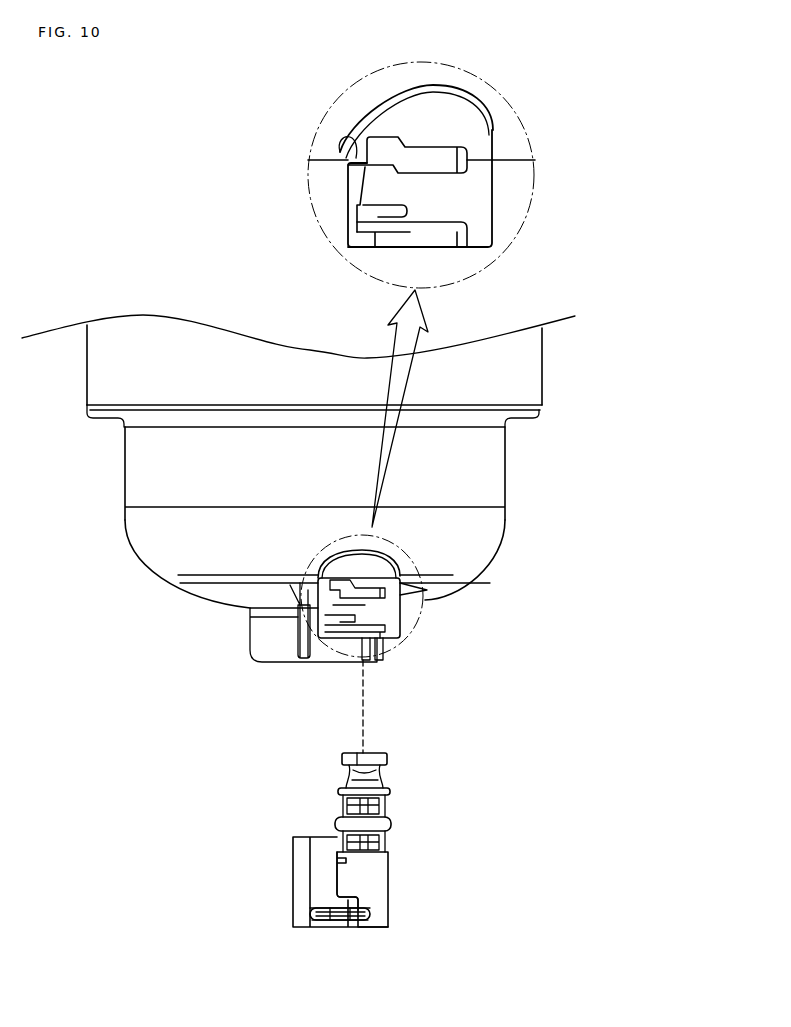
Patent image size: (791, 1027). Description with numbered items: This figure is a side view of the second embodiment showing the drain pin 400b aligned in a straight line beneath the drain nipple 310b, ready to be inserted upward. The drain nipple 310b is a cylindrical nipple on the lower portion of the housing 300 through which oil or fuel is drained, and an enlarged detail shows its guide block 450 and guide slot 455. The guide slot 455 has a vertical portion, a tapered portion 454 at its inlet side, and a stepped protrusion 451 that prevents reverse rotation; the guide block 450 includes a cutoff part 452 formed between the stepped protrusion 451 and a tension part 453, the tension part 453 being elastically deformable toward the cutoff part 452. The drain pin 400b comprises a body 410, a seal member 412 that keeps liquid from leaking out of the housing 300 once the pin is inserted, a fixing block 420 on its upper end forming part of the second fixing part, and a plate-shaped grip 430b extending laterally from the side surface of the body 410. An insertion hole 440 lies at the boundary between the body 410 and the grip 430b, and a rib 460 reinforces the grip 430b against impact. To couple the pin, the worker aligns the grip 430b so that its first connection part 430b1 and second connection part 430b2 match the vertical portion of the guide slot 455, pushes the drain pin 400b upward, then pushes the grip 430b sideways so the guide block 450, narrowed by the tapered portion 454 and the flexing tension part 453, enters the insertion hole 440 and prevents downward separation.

The housing 300 is at (507, 463).
The drain nipple 310b is at (403, 605).
The drain pin 400b is at (322, 778).
The body 410 is at (382, 868).
The seal member 412 is at (392, 822).
The fixing block 420 is at (387, 760).
The grip 430b is at (302, 887).
The first connection part 430b1 is at (340, 853).
The second connection part 430b2 is at (350, 927).
The insertion hole 440 is at (336, 873).
The guide block 450 is at (587, 160).
The stepped protrusion 451 is at (395, 168).
The cutoff part 452 is at (393, 218).
The tension part 453 is at (392, 226).
The tapered portion 454 is at (362, 182).
The guide slot 455 is at (368, 150).
The rib 460 is at (370, 912).